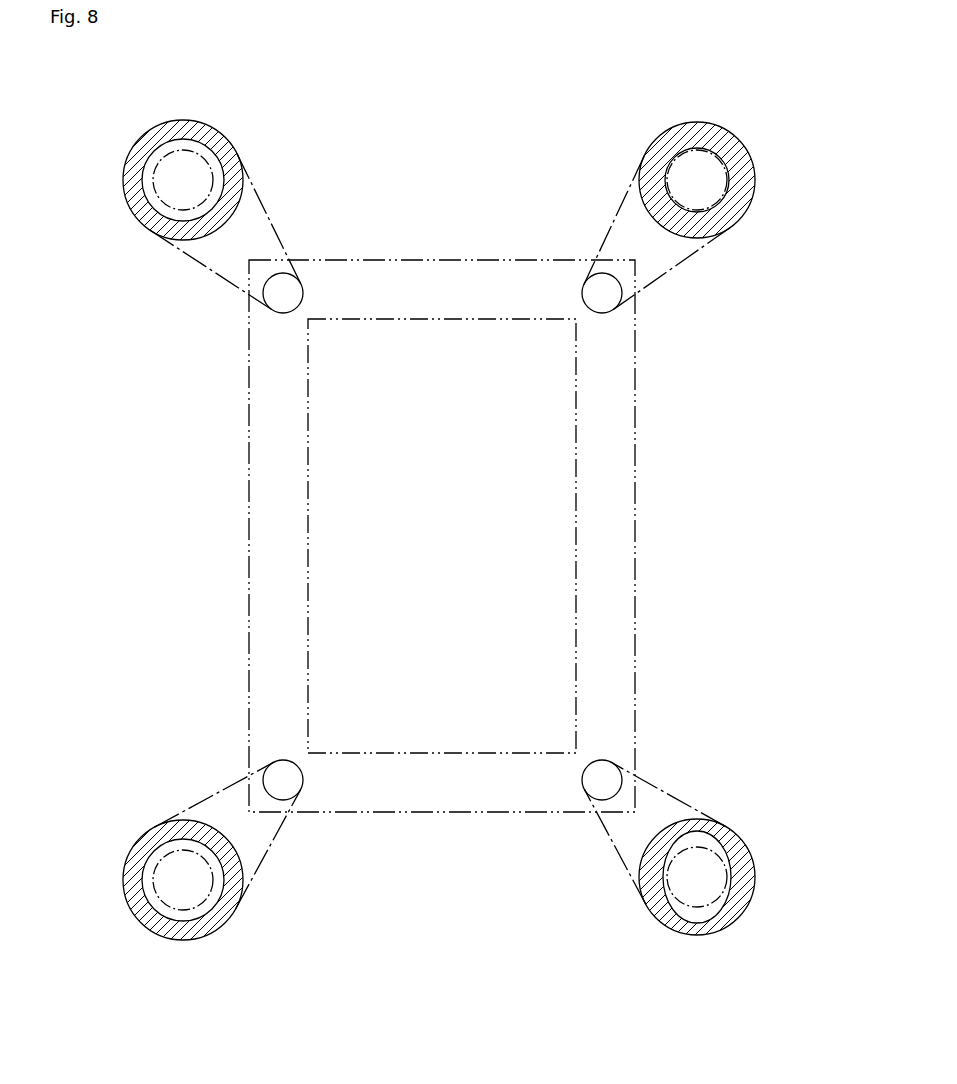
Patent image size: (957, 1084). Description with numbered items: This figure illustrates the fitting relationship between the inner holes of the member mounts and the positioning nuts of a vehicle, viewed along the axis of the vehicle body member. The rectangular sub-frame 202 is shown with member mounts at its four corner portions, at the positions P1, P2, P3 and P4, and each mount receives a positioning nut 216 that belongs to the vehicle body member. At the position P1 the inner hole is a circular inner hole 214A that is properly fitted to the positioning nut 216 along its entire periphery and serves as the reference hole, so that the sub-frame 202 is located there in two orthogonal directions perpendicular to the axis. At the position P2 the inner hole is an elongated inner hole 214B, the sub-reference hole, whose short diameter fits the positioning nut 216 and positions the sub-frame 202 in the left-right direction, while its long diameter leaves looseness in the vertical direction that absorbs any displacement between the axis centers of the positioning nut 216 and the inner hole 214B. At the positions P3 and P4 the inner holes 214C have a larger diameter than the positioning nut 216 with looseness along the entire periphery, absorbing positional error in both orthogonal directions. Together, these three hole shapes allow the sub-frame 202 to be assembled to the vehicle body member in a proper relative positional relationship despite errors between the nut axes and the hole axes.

The sub-frame 202 is at (642, 486).
The circular inner hole 214A is at (727, 183).
The elongated inner hole 214B is at (718, 892).
The inner hole 214C is at (150, 199).
The positioning nut 216 is at (175, 172).
The position P1 is at (614, 318).
The position P2 is at (614, 754).
The position P3 is at (276, 754).
The position P4 is at (276, 318).